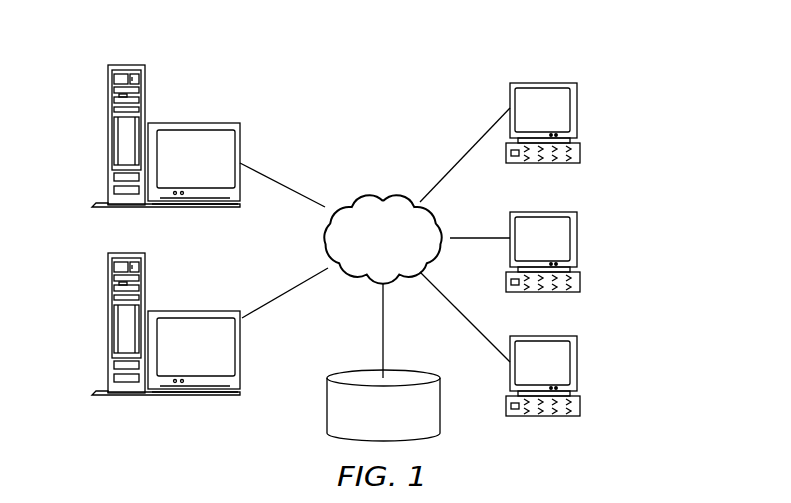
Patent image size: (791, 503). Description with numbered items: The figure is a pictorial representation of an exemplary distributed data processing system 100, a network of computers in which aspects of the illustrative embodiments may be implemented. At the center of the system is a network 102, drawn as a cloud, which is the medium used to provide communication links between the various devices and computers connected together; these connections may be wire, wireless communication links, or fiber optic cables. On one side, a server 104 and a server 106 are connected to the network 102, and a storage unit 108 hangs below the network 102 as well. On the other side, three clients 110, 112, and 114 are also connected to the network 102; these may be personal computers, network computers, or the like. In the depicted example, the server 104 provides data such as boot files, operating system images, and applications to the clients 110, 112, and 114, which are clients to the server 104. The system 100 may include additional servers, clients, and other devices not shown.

The distributed data processing system 100 is at (428, 74).
The network 102 is at (357, 192).
The server 104 is at (108, 137).
The server 106 is at (108, 323).
The storage unit 108 is at (327, 409).
The client 110 is at (577, 110).
The client 112 is at (577, 238).
The client 114 is at (577, 365).